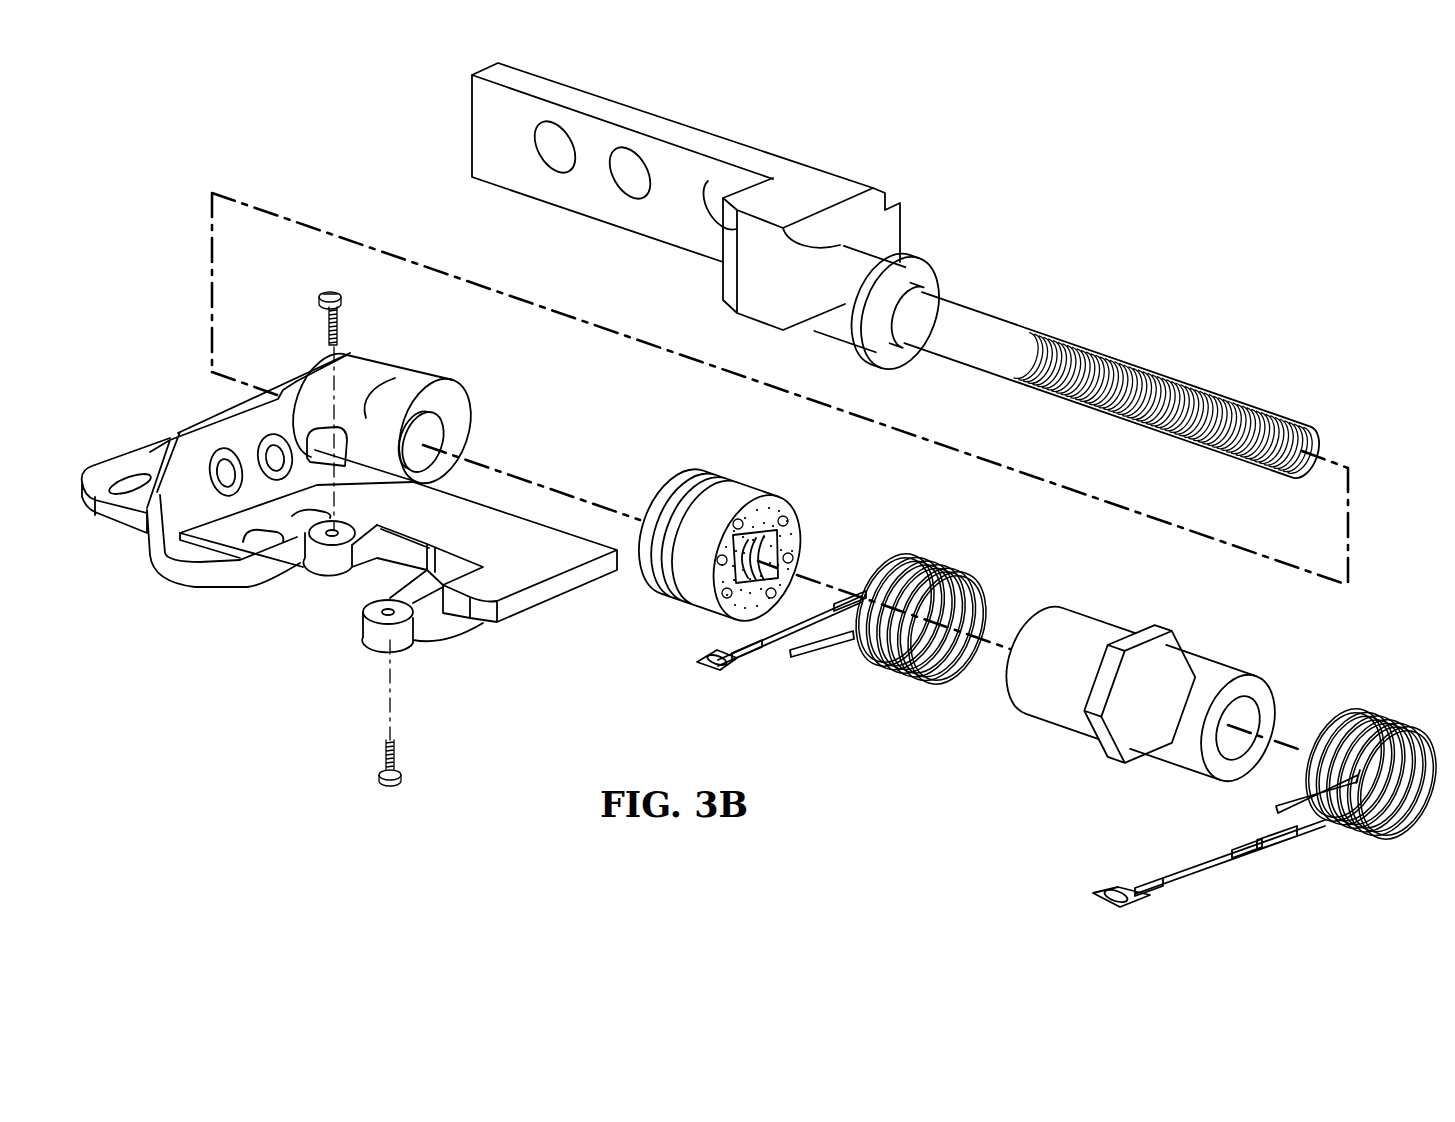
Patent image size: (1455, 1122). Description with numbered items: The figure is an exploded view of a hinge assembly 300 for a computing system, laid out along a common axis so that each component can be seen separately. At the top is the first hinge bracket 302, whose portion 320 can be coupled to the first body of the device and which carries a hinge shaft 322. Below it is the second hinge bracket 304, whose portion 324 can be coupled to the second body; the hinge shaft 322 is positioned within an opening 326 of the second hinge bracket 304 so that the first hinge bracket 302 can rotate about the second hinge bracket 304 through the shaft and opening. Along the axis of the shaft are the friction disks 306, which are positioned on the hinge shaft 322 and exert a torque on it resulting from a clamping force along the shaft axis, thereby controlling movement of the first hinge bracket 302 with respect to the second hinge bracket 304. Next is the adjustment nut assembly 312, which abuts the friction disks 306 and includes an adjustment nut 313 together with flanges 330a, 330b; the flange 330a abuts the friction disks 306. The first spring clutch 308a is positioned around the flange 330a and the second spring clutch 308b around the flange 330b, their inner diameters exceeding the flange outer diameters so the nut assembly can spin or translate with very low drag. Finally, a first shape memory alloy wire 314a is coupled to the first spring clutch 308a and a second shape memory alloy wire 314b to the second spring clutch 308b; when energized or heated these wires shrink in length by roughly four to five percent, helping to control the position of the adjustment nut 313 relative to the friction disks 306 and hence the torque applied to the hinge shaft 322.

The hinge assembly 300 is at (1116, 147).
The first hinge bracket 302 is at (761, 115).
The second hinge bracket 304 is at (605, 449).
The friction disks 306 is at (751, 463).
The first spring clutch 308a is at (825, 611).
The second spring clutch 308b is at (1220, 796).
The adjustment nut assembly 312 is at (1140, 690).
The adjustment nut 313 is at (1140, 693).
The first shape memory alloy wire 314a is at (701, 677).
The second shape memory alloy wire 314b is at (1084, 906).
The portion of the first hinge bracket 320 is at (577, 229).
The hinge shaft 322 is at (1161, 354).
The portion of the second hinge bracket 324 is at (221, 607).
The opening 326 is at (493, 426).
The flange 330a is at (1103, 603).
The flange 330b is at (1209, 718).